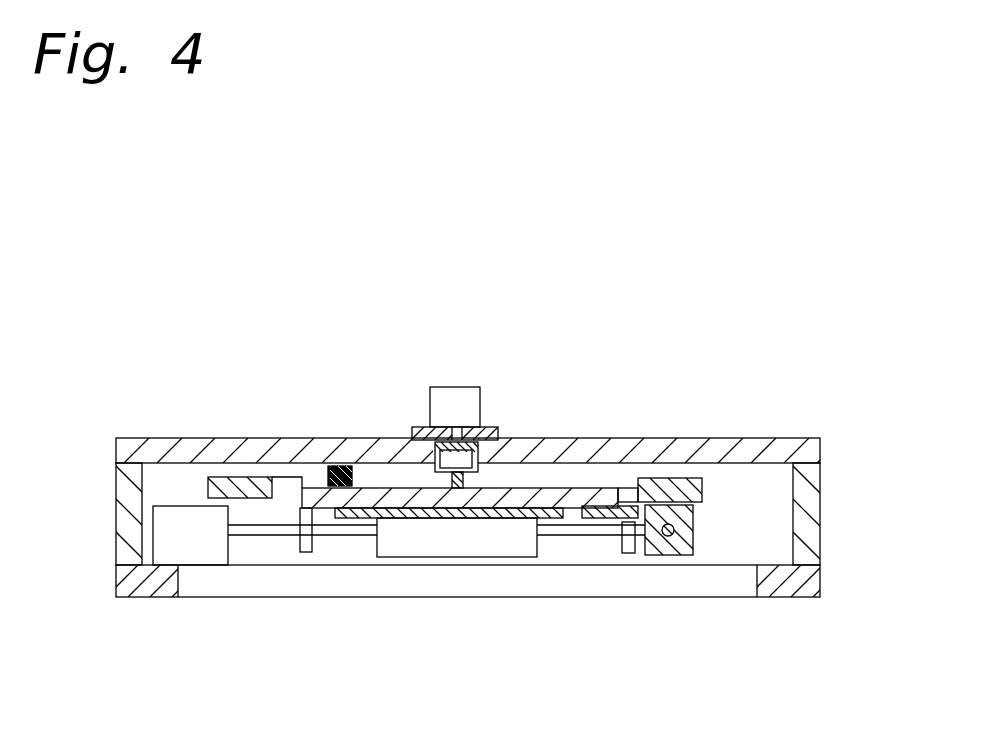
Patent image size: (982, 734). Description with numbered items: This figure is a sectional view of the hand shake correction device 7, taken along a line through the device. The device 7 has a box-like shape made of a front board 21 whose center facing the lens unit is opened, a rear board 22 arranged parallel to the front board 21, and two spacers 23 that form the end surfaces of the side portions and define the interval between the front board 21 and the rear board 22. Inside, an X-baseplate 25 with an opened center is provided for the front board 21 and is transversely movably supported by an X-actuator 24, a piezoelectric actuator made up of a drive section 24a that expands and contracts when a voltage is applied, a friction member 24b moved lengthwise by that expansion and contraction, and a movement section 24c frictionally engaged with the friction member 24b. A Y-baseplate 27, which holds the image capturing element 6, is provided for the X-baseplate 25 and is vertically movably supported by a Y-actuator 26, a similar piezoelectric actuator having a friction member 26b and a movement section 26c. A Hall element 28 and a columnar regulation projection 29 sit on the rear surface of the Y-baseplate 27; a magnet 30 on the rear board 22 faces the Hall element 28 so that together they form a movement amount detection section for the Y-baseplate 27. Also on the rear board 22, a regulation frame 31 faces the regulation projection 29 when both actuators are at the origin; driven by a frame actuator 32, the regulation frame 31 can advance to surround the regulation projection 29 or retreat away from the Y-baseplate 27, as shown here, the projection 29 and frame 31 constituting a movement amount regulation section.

The hand shake correction device 7 is at (148, 347).
The front board 21 is at (147, 598).
The rear board 22 is at (181, 438).
The spacers 23 is at (116, 522).
The X-actuator 24 is at (243, 557).
The drive section 24a is at (204, 566).
The friction member 24b is at (338, 540).
The movement section 24c is at (427, 560).
The X-baseplate 25 is at (670, 478).
The Y-actuator 26 is at (638, 560).
The friction member 26b is at (676, 530).
The movement section 26c is at (658, 556).
The Y-baseplate 27 is at (570, 488).
The Hall element 28 is at (325, 483).
The regulation projection 29 is at (464, 487).
The magnet 30 is at (348, 466).
The regulation frame 31 is at (433, 445).
The frame actuator 32 is at (448, 385).
The image capturing element 6 is at (490, 522).